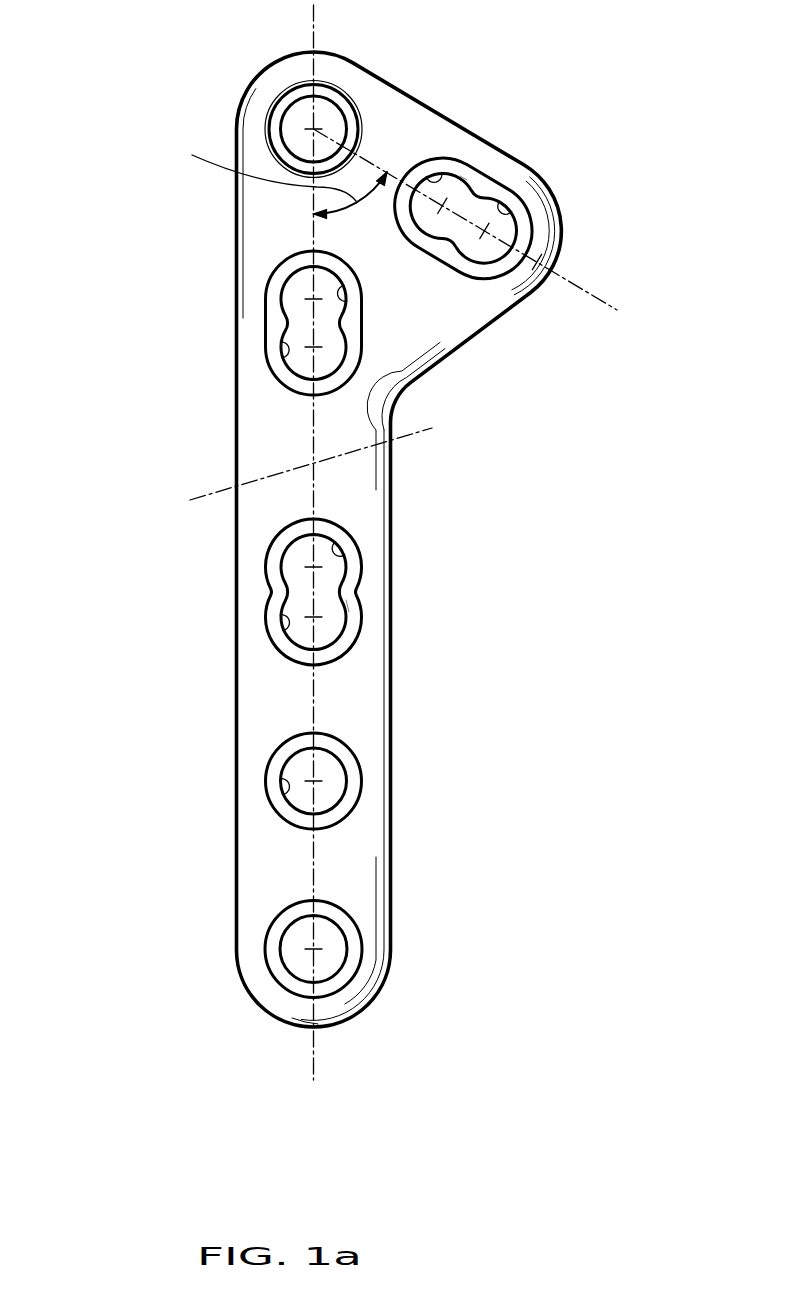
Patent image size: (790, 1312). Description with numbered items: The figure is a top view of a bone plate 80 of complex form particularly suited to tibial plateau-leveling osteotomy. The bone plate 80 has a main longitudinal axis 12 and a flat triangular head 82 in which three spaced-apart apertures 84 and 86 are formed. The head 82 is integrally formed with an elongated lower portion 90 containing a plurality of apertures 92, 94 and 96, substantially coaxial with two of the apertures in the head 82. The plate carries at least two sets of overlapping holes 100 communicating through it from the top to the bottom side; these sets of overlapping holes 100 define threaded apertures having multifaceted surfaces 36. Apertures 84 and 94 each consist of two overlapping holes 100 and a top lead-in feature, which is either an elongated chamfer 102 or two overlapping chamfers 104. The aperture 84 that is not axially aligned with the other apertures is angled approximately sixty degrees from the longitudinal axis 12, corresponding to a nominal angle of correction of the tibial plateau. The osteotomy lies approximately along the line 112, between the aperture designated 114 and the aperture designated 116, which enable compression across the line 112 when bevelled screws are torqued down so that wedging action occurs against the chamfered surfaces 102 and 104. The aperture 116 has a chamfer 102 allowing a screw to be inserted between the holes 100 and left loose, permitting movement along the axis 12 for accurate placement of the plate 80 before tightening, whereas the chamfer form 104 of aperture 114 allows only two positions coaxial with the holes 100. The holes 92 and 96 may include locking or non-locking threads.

The bone plate 80 is at (205, 205).
The flat triangular head 82 is at (388, 112).
The aperture 84 is at (522, 222).
The aperture 86 is at (343, 106).
The elongated lower portion 90 is at (262, 693).
The aperture 92 is at (333, 790).
The aperture 94 is at (280, 570).
The aperture 96 is at (333, 960).
The overlapping holes 100 is at (456, 178).
The elongated chamfer 102 is at (483, 188).
The overlapping chamfers 104 is at (349, 612).
The line 112 is at (426, 429).
The aperture 114 is at (232, 592).
The aperture 116 is at (287, 382).
The multifaceted surfaces 36 is at (440, 180).
The main longitudinal axis 12 is at (314, 1067).